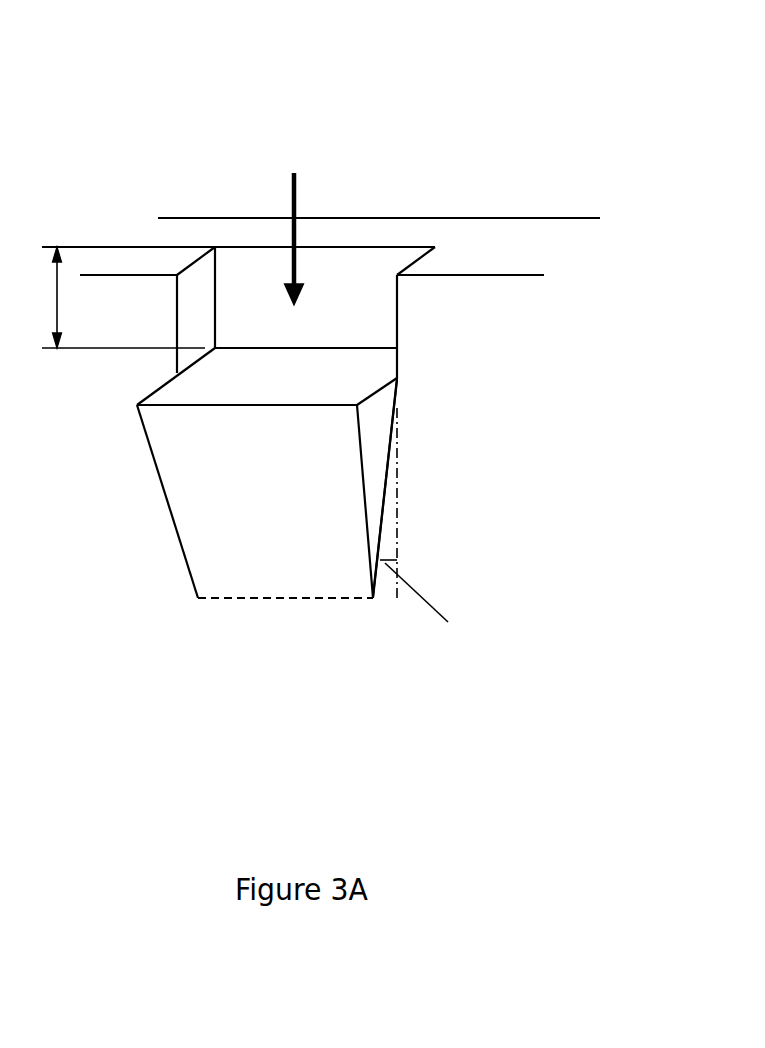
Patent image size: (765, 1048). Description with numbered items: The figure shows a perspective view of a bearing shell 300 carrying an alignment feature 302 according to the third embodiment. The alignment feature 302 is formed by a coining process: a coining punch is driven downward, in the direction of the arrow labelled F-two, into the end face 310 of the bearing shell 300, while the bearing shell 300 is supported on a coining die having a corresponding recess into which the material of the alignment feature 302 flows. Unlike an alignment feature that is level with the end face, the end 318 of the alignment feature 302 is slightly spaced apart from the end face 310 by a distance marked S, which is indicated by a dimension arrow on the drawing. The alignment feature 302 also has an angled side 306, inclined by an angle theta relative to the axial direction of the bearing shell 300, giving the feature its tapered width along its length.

The bearing shell 300 is at (135, 110).
The end face 310 is at (497, 247).
The alignment feature 302 is at (290, 517).
The end of the alignment feature 318 is at (328, 395).
The side of the alignment feature 306 is at (378, 438).